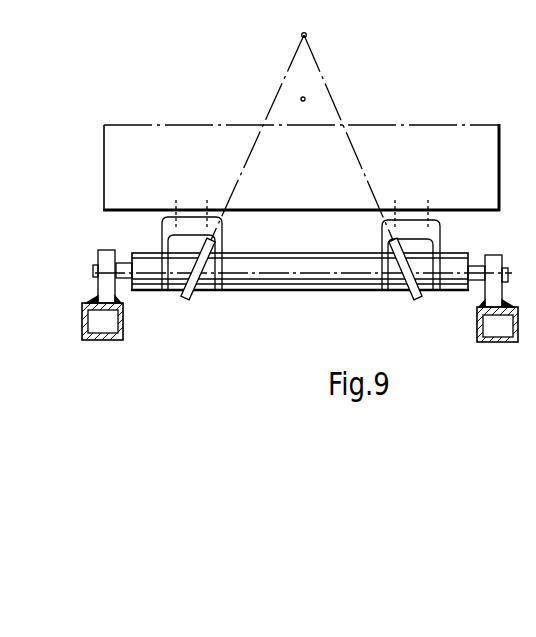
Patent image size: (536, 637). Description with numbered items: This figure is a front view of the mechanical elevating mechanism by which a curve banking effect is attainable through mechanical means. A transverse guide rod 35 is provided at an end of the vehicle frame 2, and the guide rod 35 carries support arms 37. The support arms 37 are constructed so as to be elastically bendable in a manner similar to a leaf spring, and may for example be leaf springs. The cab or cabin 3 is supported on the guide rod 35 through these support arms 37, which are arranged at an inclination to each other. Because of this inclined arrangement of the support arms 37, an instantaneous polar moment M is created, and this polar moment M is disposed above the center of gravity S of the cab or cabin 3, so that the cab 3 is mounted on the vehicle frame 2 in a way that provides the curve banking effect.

The vehicle frame 2 is at (110, 285).
The cab or cabin 3 is at (487, 157).
The transverse guide rod 35 is at (308, 277).
The support arms 37 is at (190, 300).
The instantaneous polar moment M is at (306, 33).
The center of gravity S is at (303, 97).